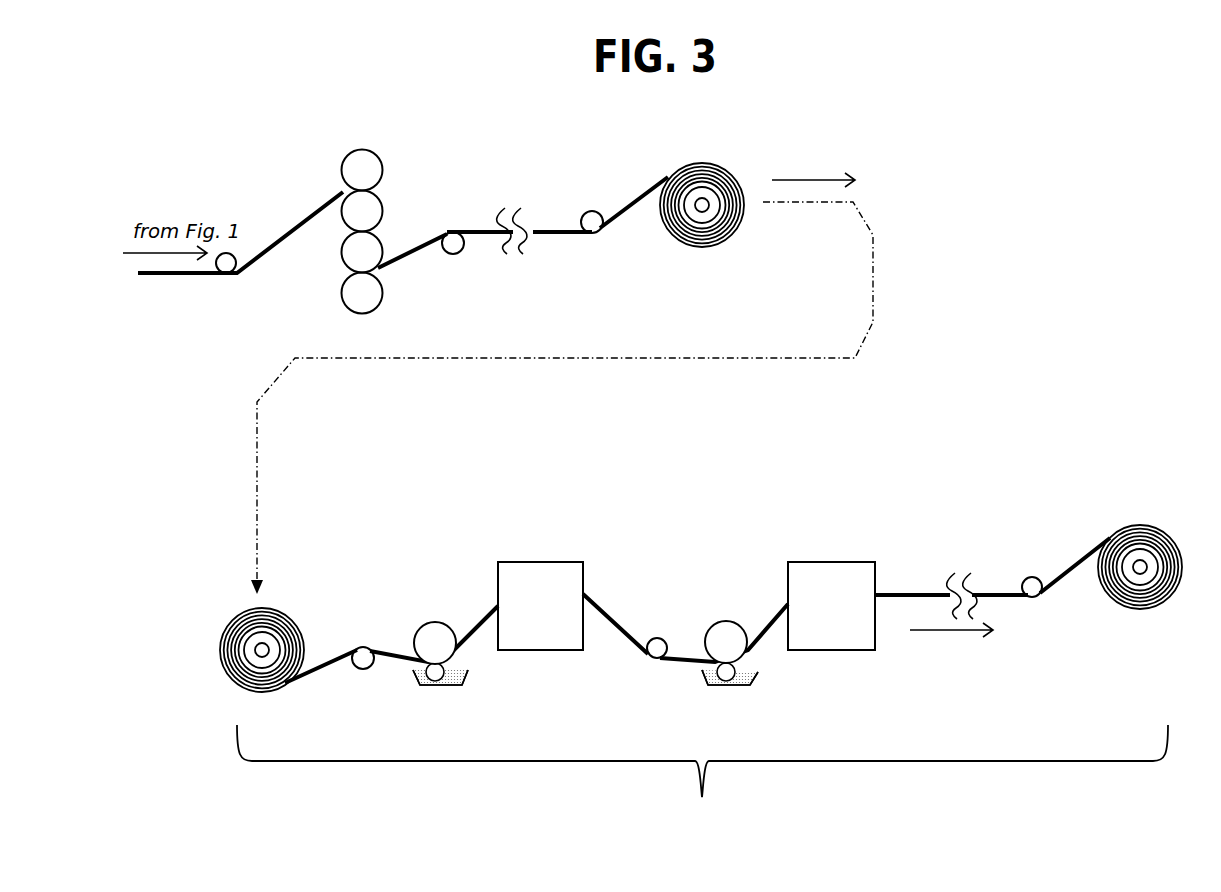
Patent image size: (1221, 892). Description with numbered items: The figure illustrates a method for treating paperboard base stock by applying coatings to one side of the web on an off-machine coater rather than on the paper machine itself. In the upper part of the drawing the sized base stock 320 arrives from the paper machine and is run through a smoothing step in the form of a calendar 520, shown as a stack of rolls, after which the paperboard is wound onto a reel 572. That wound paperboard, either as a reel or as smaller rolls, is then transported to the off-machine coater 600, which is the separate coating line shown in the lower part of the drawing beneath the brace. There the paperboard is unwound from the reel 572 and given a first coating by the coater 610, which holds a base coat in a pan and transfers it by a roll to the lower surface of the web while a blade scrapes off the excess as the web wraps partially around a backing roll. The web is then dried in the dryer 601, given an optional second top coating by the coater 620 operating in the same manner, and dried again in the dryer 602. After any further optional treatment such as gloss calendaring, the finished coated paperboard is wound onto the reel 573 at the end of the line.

The base stock 320 is at (190, 273).
The calendar 520 is at (343, 158).
The reel 572 is at (672, 172).
The reel 573 is at (1112, 533).
The off-machine coater 600 is at (702, 781).
The dryer 601 is at (540, 606).
The dryer 602 is at (831, 606).
The coater 610 is at (431, 623).
The coater 620 is at (724, 623).